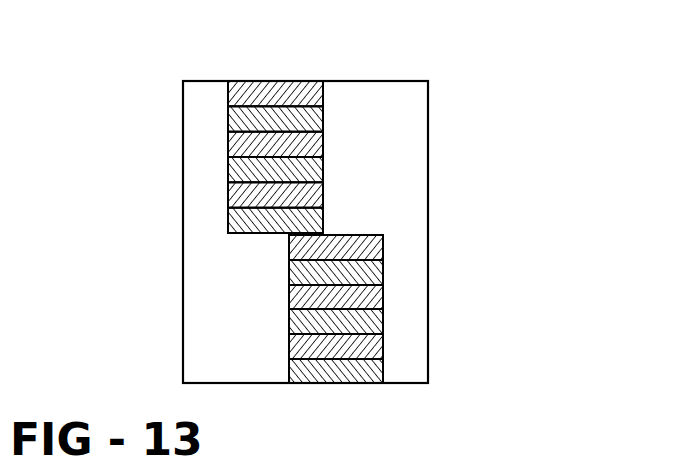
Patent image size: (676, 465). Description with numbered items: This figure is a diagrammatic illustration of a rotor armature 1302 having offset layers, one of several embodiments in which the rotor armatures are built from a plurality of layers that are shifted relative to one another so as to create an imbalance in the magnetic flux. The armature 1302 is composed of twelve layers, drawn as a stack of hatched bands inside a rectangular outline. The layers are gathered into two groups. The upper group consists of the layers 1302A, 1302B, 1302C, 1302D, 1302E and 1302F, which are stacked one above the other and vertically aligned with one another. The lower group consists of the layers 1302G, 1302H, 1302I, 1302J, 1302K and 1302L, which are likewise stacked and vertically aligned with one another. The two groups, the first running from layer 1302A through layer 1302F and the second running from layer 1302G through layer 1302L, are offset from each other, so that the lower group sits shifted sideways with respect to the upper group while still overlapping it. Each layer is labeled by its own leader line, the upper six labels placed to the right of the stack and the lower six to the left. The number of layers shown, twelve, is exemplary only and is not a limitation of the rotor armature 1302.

The armature 1302 is at (462, 23).
The layer 1302A is at (323, 94).
The layer 1302B is at (323, 119).
The layer 1302C is at (323, 145).
The layer 1302D is at (323, 170).
The layer 1302E is at (323, 195).
The layer 1302F is at (323, 221).
The layer 1302G is at (289, 258).
The layer 1302H is at (289, 280).
The layer 1302I is at (289, 303).
The layer 1302J is at (289, 327).
The layer 1302K is at (289, 352).
The layer 1302L is at (289, 377).